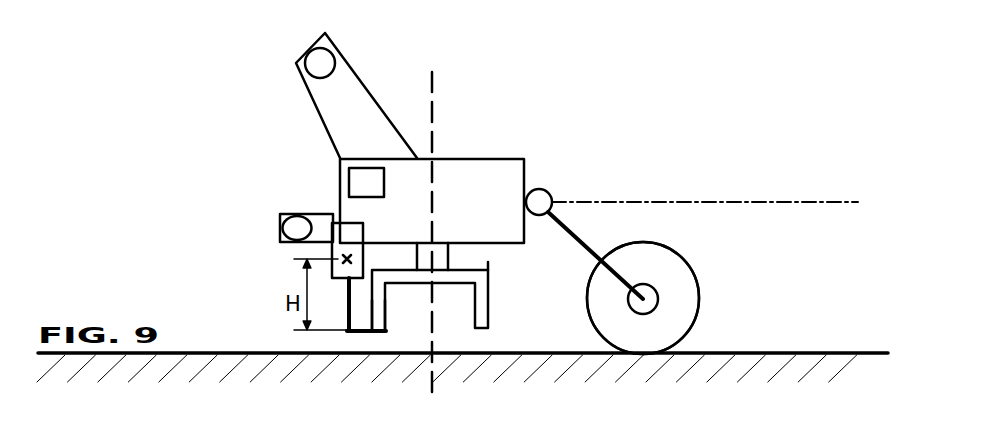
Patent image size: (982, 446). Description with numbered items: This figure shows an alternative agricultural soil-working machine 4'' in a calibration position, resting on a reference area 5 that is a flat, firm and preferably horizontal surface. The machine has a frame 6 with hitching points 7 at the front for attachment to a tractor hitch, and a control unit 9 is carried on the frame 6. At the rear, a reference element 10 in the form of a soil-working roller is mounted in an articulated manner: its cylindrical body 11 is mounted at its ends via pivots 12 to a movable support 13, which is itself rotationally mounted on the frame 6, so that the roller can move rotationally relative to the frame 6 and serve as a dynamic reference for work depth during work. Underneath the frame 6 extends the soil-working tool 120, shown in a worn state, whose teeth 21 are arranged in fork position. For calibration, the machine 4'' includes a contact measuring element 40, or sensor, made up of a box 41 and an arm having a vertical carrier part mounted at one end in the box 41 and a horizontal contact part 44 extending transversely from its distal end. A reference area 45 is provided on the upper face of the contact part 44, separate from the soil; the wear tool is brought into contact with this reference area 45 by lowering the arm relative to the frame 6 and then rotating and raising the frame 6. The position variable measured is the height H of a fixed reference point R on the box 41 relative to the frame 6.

The agricultural machine 4'' is at (491, 52).
The reference area 5 is at (813, 352).
The frame 6 is at (478, 158).
The hitching points 7 is at (296, 64).
The control unit 9 is at (363, 182).
The reference element 10 is at (703, 285).
The cylindrical body 11 is at (688, 298).
The pivots 12 is at (638, 310).
The support 13 is at (600, 202).
The soil-working tool 120 is at (486, 262).
The teeth 21 is at (493, 326).
The contact measuring element 40 is at (336, 216).
The box 41 is at (337, 258).
The contact part 44 is at (355, 333).
The reference area 45 is at (359, 330).